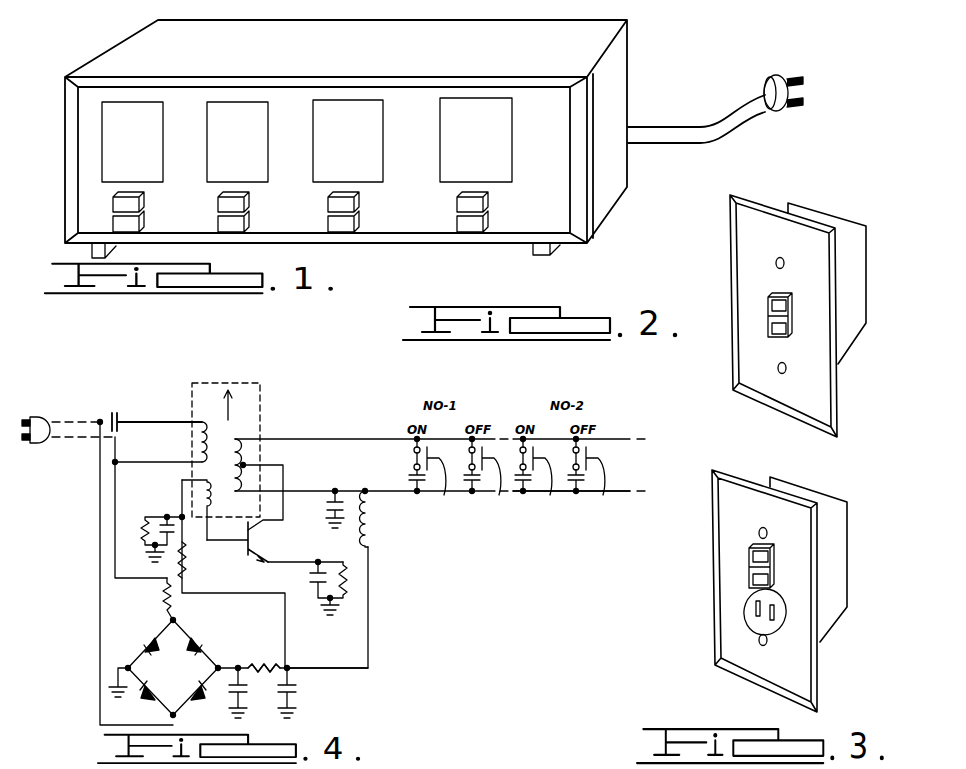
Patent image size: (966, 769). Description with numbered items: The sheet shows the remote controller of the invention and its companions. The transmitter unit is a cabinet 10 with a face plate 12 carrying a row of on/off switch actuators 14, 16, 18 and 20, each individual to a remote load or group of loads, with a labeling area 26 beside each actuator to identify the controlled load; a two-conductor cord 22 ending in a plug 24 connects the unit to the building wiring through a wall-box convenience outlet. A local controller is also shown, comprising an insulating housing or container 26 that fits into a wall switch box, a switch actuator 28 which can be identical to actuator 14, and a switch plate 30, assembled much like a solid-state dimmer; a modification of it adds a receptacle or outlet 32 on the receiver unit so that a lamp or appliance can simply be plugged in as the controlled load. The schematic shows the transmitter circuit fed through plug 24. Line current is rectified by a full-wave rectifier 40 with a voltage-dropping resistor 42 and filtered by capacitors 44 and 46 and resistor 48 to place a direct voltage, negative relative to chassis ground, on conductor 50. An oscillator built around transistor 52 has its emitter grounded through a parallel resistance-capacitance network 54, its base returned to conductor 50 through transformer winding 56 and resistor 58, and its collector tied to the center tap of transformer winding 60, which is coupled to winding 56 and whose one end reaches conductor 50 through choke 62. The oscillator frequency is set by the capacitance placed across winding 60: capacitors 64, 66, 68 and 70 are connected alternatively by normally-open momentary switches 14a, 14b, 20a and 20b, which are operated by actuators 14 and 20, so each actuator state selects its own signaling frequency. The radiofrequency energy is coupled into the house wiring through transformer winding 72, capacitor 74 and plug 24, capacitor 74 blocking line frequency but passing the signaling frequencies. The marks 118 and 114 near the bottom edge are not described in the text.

In FIG. 1, the cabinet 10 is at (346, 139).
In FIG. 1, the face plate 12 is at (547, 120).
In FIG. 1, the on/off switch actuator 14 is at (148, 204).
In FIG. 1, the on/off switch actuator 16 is at (253, 204).
In FIG. 1, the on/off switch actuator 18 is at (364, 205).
In FIG. 1, the on/off switch actuator 20 is at (492, 205).
In FIG. 1, the two-conductor cord 22 is at (684, 143).
In FIG. 1, the plug 24 is at (772, 73).
In FIG. 4, the plug 24 is at (48, 415).
In FIG. 1, the labeling area / housing or container 26 is at (150, 102).
In FIG. 2, the labeling area / housing or container 26 is at (843, 223).
In FIG. 2, the switch actuator 28 is at (788, 340).
In FIG. 2, the switch plate 30 is at (750, 231).
In FIG. 3, the receptacle or outlet 32 is at (745, 600).
In FIG. 4, the full-wave rectifier 40 is at (178, 672).
In FIG. 4, the voltage-dropping resistor 42 is at (170, 602).
In FIG. 4, the capacitor 44 is at (233, 697).
In FIG. 4, the capacitor 46 is at (297, 697).
In FIG. 4, the resistor 48 is at (266, 660).
In FIG. 4, the conductor 50 is at (342, 668).
In FIG. 4, the transistor 52 is at (235, 551).
In FIG. 4, the parallel resistance-capacitance network 54 is at (301, 580).
In FIG. 4, the transformer winding 56 is at (215, 501).
In FIG. 4, the resistor 58 is at (182, 568).
In FIG. 4, the transformer winding 60 is at (233, 437).
In FIG. 4, the choke 62 is at (380, 460).
In FIG. 4, the capacitor 64 is at (439, 501).
In FIG. 4, the capacitor 66 is at (493, 501).
In FIG. 4, the capacitor 68 is at (551, 501).
In FIG. 4, the capacitor 70 is at (603, 493).
In FIG. 4, the transformer winding 72 is at (218, 425).
In FIG. 4, the capacitor 74 is at (119, 411).
In FIG. 4, the normally-open momentary switch 14a is at (421, 494).
In FIG. 4, the normally-open momentary switch 14b is at (476, 494).
In FIG. 4, the normally-open momentary switch 20a is at (514, 545).
In FIG. 4, the normally-open momentary switch 20b is at (598, 462).
In FIG. 4, the line 118 is at (461, 759).
In FIG. 4, the line 114 is at (541, 759).